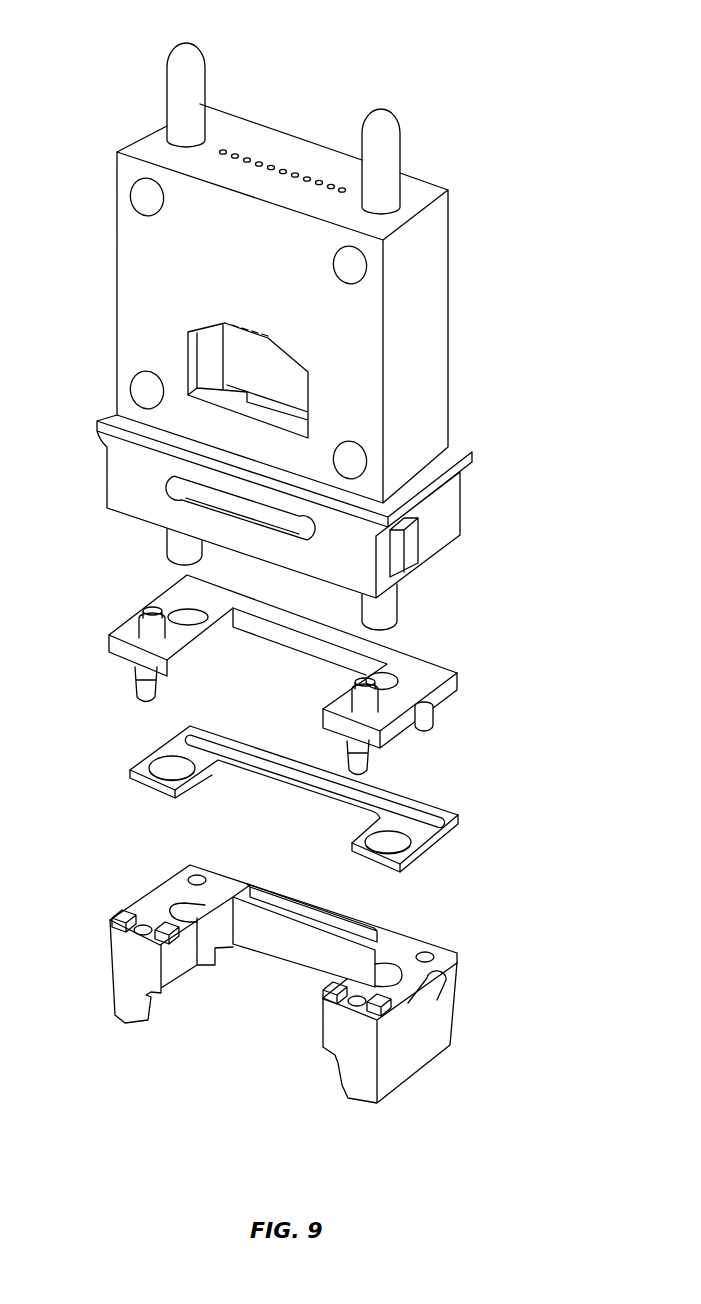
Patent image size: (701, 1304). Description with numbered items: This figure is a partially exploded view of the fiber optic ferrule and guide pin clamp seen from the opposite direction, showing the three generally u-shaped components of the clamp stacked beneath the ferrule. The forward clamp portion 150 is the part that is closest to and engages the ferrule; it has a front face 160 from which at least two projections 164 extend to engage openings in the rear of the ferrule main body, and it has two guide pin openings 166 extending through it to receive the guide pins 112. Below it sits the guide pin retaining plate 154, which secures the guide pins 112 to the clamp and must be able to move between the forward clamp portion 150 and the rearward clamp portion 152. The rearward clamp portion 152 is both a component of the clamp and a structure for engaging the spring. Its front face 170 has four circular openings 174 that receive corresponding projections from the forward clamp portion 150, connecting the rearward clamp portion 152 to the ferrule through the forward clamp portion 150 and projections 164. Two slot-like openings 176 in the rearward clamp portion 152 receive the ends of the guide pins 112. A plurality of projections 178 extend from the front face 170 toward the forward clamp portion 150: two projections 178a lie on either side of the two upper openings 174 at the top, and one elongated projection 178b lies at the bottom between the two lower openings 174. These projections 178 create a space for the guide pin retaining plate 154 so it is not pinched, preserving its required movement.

The guide pins 112 is at (199, 50).
The forward clamp portion 150 is at (291, 675).
The rearward clamp portion 152 is at (279, 987).
The guide pin retaining plate 154 is at (455, 822).
The front face 160 is at (442, 667).
The projections 164 is at (137, 630).
The guide pin openings 166 is at (398, 672).
The front face 170 is at (283, 931).
The openings 174 is at (147, 925).
The openings 176 is at (377, 977).
The projections 178 is at (392, 1006).
The projections 178a is at (163, 940).
The elongated projection 178b is at (297, 892).